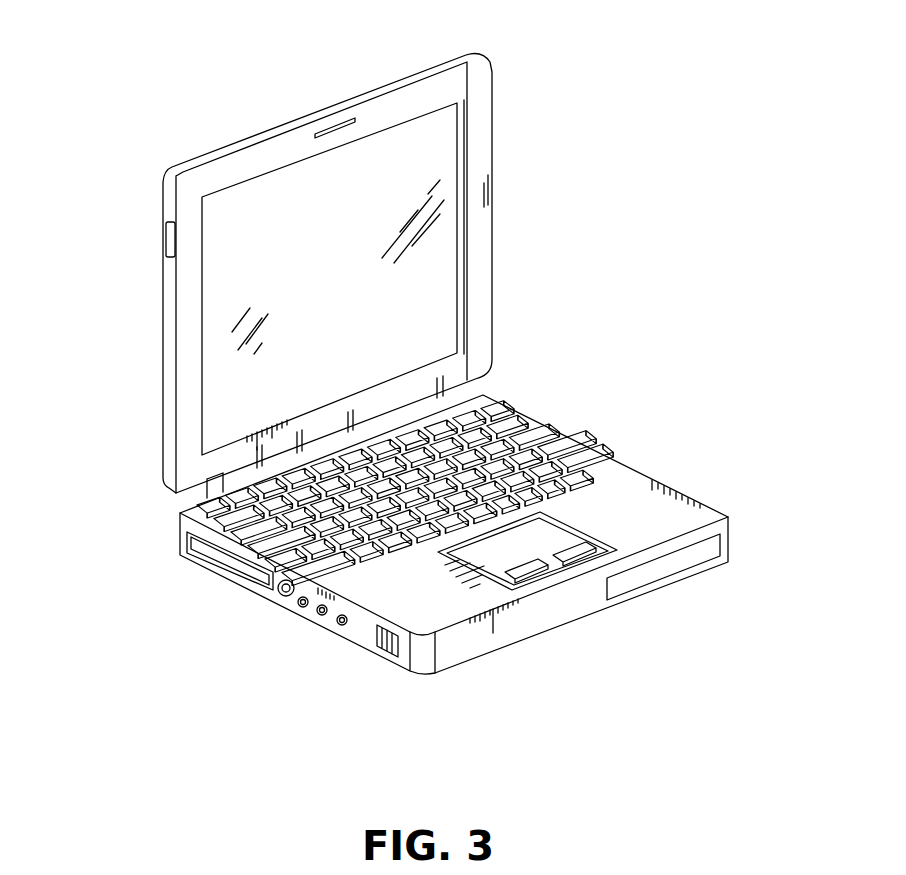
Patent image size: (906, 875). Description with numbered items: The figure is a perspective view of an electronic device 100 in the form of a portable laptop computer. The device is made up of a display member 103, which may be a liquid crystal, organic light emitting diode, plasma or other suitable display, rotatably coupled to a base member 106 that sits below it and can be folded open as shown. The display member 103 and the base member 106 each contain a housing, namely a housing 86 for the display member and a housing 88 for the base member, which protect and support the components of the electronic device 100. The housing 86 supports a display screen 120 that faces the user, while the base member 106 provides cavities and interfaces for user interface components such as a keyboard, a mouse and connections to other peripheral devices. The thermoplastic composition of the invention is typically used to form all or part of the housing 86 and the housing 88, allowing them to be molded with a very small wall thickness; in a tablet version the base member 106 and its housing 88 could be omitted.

The electronic device 100 is at (542, 73).
The housing 86 is at (493, 212).
The housing 88 is at (621, 463).
The display member 103 is at (161, 336).
The base member 106 is at (289, 620).
The display screen 120 is at (361, 310).